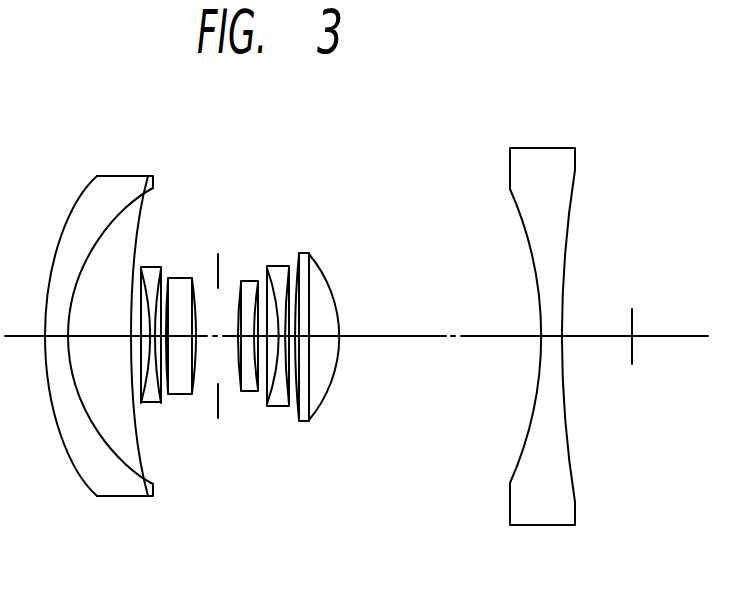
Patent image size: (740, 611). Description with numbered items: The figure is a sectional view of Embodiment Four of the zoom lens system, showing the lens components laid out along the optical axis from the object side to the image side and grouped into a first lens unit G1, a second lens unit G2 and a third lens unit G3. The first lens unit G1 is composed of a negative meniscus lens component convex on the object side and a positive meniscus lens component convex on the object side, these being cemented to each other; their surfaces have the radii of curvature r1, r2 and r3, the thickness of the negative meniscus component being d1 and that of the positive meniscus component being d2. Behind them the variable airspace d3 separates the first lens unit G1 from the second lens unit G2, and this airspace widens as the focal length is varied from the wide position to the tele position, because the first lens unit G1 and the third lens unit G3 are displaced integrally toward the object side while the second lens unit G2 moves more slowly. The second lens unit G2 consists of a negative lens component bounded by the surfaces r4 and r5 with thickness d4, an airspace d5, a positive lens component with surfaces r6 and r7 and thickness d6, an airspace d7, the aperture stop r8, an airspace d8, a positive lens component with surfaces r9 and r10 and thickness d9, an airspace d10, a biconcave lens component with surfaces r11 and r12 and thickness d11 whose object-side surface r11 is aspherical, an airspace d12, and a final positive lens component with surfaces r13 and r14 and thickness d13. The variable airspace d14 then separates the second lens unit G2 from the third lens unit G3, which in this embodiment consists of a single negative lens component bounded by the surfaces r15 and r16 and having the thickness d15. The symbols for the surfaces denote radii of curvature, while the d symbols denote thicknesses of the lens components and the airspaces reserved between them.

The radius of curvature of first surface r1 is at (86, 191).
The radius of curvature of second surface r2 is at (119, 212).
The radius of curvature of third surface r3 is at (144, 295).
The radius of curvature of fourth surface r4 is at (158, 266).
The radius of curvature of fifth surface r5 is at (167, 266).
The radius of curvature of sixth surface r6 is at (182, 277).
The radius of curvature of seventh surface r7 is at (196, 278).
The aperture stop surface r8 is at (218, 257).
The radius of curvature of ninth surface r9 is at (238, 288).
The radius of curvature of tenth surface r10 is at (247, 281).
The radius of curvature of eleventh surface r11 is at (270, 266).
The radius of curvature of twelfth surface r12 is at (285, 266).
The radius of curvature of thirteenth surface r13 is at (308, 254).
The radius of curvature of fourteenth surface r14 is at (327, 290).
The radius of curvature of fifteenth surface r15 is at (510, 190).
The radius of curvature of sixteenth surface r16 is at (579, 296).
The thickness of first lens component d1 is at (56, 337).
The thickness of second lens component d2 is at (94, 338).
The variable airspace D1 d3 is at (134, 336).
The thickness of negative lens component d4 is at (143, 403).
The airspace d5 is at (162, 403).
The thickness of positive lens component d6 is at (176, 395).
The airspace d7 is at (190, 394).
The airspace d8 is at (223, 420).
The thickness of positive lens component d9 is at (246, 393).
The airspace d10 is at (268, 334).
The thickness of biconcave lens component d11 is at (283, 408).
The airspace d12 is at (298, 342).
The thickness of positive lens component d13 is at (315, 343).
The variable airspace D2 d14 is at (429, 338).
The thickness of third lens unit lens component d15 is at (554, 338).
The first lens unit G1 is at (101, 342).
The second lens unit G2 is at (243, 360).
The third lens unit G3 is at (535, 340).